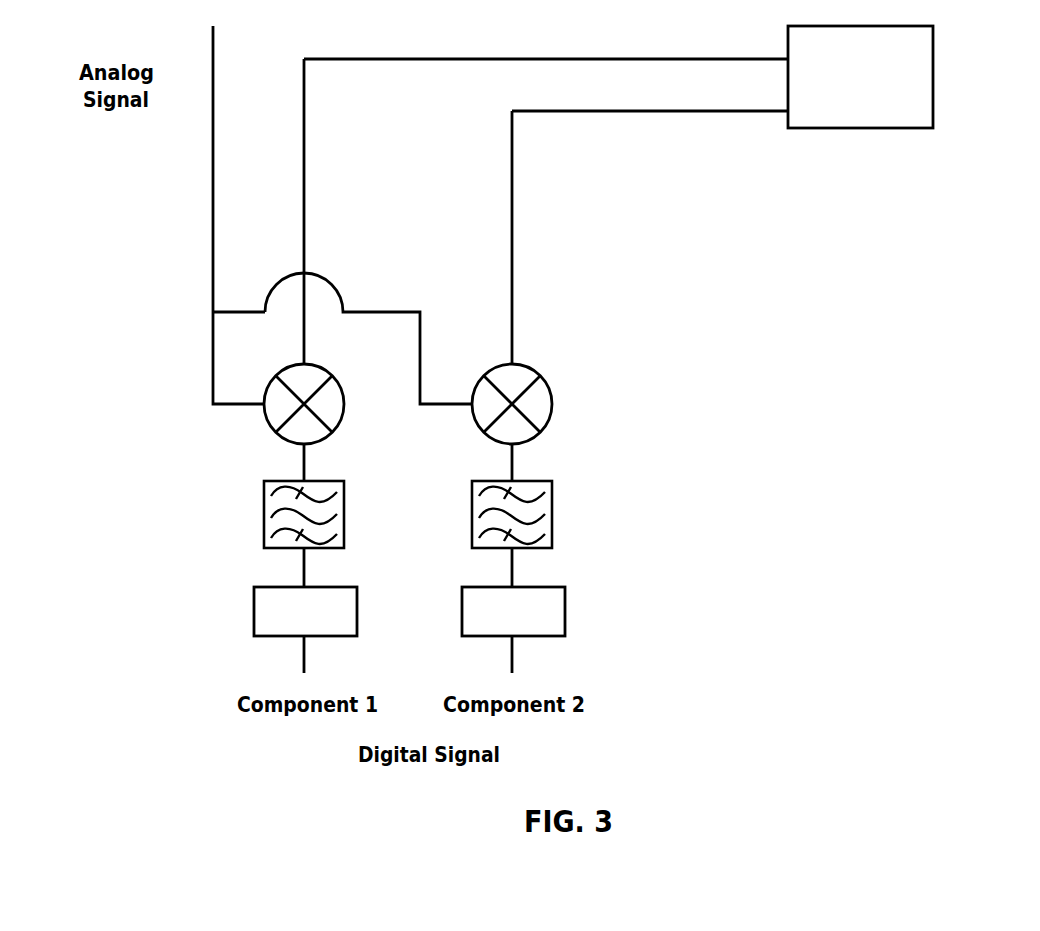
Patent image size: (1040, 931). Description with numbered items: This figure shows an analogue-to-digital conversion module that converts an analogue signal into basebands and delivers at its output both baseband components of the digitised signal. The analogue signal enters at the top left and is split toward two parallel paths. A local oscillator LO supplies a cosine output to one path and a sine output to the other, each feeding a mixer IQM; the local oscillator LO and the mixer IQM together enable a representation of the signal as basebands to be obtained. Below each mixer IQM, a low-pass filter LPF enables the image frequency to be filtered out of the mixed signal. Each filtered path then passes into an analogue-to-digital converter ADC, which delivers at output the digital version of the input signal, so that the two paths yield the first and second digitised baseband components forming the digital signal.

The local oscillator LO is at (618, 83).
The mixer IQM is at (514, 404).
The low-pass filter LPF is at (568, 514).
The analogue-to-digital converter ADC is at (630, 611).